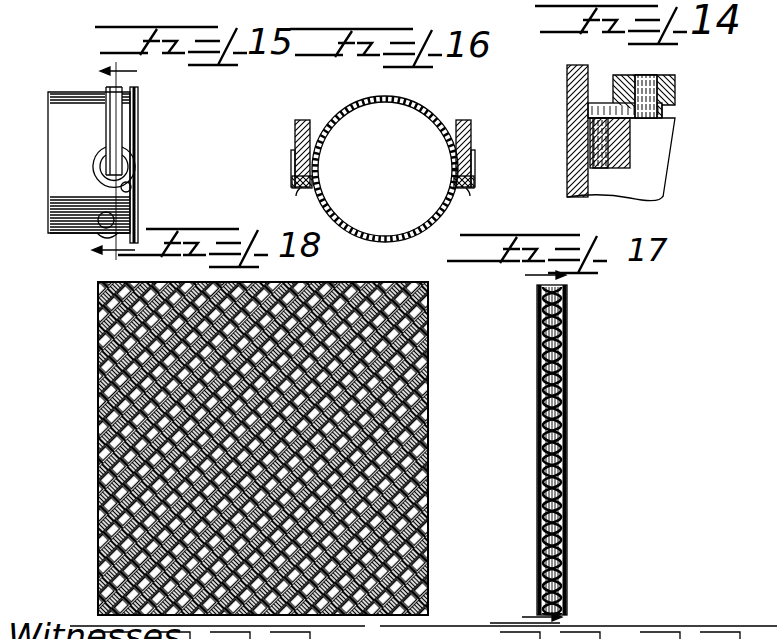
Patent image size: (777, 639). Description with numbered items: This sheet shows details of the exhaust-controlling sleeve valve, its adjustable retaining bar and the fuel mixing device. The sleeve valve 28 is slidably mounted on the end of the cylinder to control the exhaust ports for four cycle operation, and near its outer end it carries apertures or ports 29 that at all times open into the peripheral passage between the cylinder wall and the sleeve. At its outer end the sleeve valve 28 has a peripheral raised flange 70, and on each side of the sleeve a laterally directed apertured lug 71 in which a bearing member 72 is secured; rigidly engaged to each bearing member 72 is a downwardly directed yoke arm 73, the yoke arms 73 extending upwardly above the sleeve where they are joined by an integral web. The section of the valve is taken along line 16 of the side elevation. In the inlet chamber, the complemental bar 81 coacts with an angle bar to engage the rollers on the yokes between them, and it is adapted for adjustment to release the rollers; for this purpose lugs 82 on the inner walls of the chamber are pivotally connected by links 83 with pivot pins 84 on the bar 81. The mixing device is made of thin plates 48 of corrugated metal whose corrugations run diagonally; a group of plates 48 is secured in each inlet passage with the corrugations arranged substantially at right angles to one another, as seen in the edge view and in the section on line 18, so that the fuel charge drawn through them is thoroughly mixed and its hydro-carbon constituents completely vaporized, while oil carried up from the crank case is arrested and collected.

In FIG. 15, the pinion 16 is at (130, 166).
In FIG. 17, the stud shaft 18 is at (528, 444).
In FIG. 15, the sleeve valve 28 is at (65, 103).
In FIG. 16, the sleeve valve 28 is at (386, 97).
In FIG. 15, the apertures or ports 29 is at (90, 237).
In FIG. 18, the corrugated plates 48 is at (428, 527).
In FIG. 17, the corrugated plates 48 is at (567, 382).
In FIG. 15, the peripheral raised flange 70 is at (139, 120).
In FIG. 15, the apertured lug 71 is at (131, 188).
In FIG. 16, the apertured lug 71 is at (300, 188).
In FIG. 15, the bearing member 72 is at (128, 167).
In FIG. 16, the bearing member 72 is at (293, 177).
In FIG. 15, the yoke arms 73 is at (124, 92).
In FIG. 16, the yoke arms 73 is at (296, 133).
In FIG. 14, the complemental bar 81 is at (678, 90).
In FIG. 14, the lugs 82 is at (620, 152).
In FIG. 14, the links 83 is at (598, 112).
In FIG. 14, the pivot pins 84 is at (643, 89).